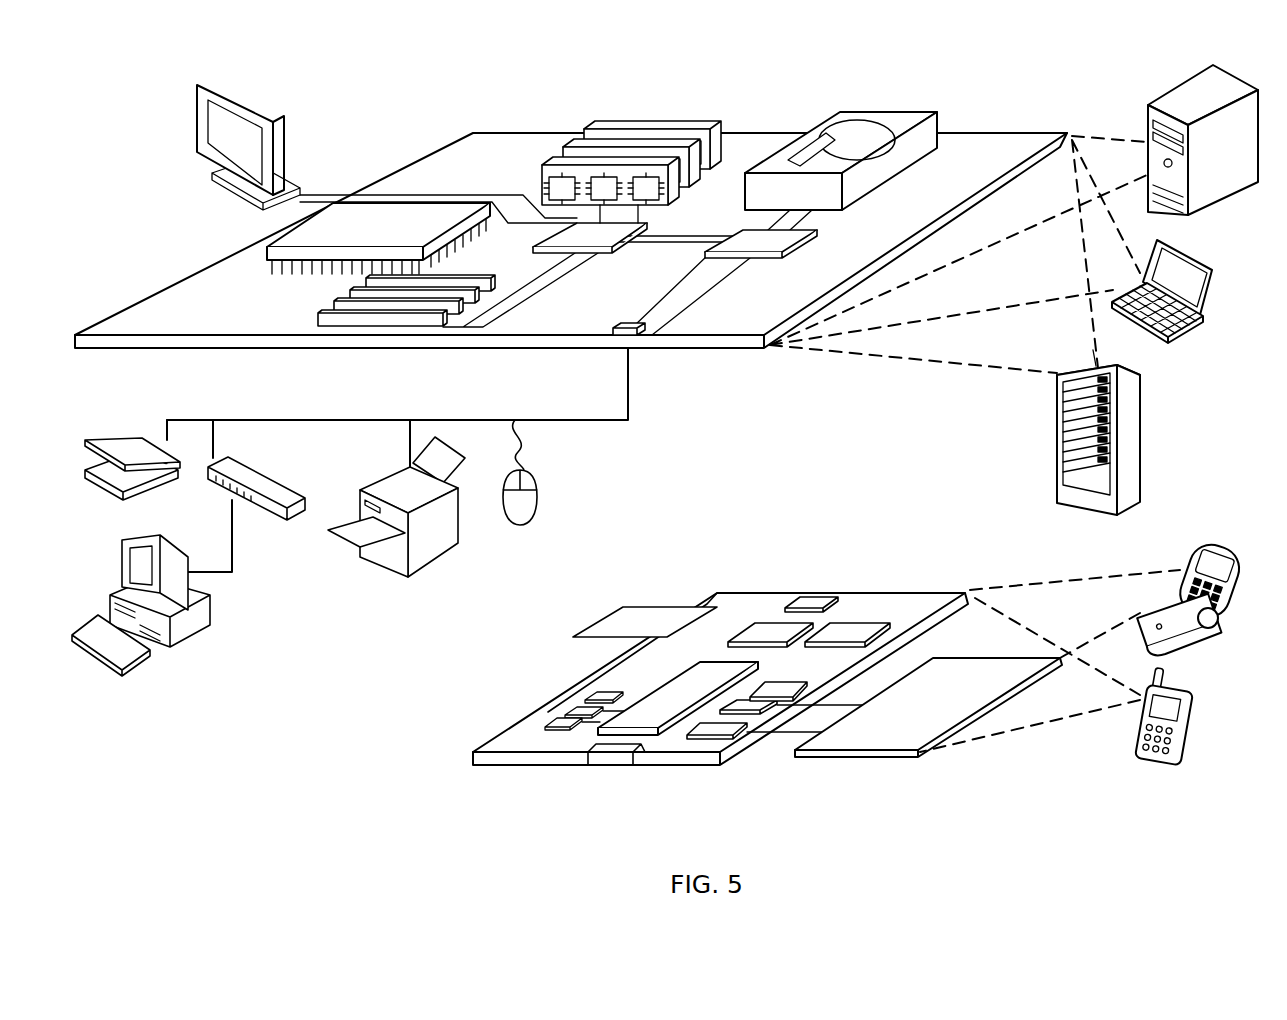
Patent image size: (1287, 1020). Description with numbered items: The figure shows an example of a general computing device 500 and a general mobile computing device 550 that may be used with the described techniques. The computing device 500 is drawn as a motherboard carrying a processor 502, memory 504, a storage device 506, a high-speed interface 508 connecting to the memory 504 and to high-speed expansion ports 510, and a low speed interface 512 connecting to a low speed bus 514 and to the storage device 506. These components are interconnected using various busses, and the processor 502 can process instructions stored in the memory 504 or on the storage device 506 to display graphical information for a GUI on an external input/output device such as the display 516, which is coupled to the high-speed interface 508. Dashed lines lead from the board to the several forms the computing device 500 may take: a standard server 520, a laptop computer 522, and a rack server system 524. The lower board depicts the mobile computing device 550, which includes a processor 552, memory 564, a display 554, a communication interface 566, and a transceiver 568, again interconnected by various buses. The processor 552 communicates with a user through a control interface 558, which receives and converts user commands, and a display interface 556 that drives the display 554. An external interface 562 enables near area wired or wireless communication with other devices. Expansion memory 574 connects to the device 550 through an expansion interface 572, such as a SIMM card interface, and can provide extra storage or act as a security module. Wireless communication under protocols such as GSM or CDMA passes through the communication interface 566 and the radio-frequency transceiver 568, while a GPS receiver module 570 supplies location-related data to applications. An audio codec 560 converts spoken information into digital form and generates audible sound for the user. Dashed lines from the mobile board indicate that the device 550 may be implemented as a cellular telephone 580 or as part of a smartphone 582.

The computing device 500 is at (397, 110).
The processor 502 is at (272, 247).
The memory 504 is at (600, 160).
The storage device 506 is at (848, 122).
The high-speed interface 508 is at (548, 237).
The high-speed expansion ports 510 is at (330, 305).
The low speed interface 512 is at (745, 240).
The low speed bus 514 is at (640, 338).
The display 516 is at (210, 92).
The standard server 520 is at (1148, 122).
The laptop computer 522 is at (1213, 272).
The rack server system 524 is at (1057, 465).
The mobile computing device 550 is at (456, 764).
The processor 552 is at (660, 722).
The display 554 is at (918, 753).
The display interface 556 is at (728, 735).
The control interface 558 is at (757, 710).
The audio codec 560 is at (788, 695).
The external interface 562 is at (620, 760).
The memory 564 is at (560, 722).
The communication interface 566 is at (770, 632).
The transceiver 568 is at (845, 633).
The GPS receiver module 570 is at (820, 604).
The expansion interface 572 is at (688, 606).
The expansion memory 574 is at (623, 606).
The cellular telephone 580 is at (1195, 568).
The smartphone 582 is at (1142, 724).